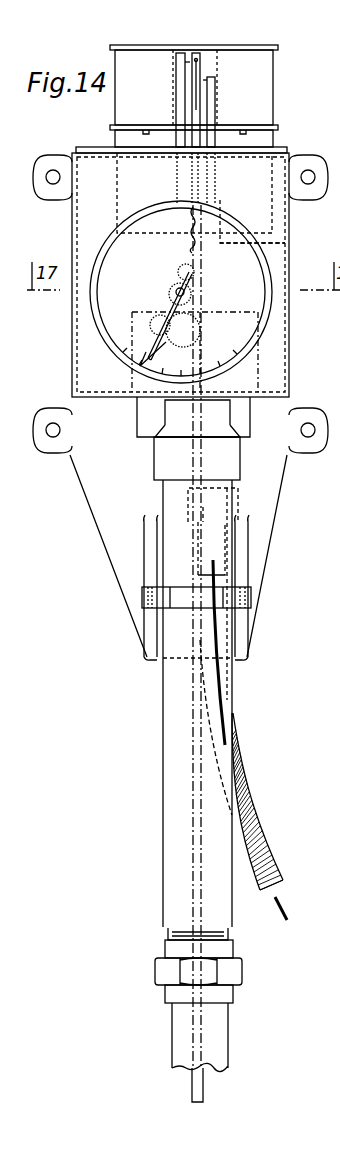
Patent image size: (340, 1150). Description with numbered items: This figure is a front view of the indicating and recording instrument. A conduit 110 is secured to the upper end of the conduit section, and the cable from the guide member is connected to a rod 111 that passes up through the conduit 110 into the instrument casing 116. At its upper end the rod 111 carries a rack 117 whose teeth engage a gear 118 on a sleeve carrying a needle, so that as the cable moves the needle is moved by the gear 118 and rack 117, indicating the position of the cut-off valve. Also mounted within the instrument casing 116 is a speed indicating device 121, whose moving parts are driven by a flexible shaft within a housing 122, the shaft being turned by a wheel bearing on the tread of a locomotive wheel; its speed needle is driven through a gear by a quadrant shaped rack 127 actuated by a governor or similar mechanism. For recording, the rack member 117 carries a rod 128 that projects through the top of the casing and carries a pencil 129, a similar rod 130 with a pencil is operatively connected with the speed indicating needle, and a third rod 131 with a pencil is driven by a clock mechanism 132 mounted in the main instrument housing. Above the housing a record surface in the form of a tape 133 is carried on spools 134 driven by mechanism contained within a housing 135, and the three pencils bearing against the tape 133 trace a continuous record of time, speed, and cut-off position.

The conduit 110 is at (168, 843).
The rod 111 is at (192, 1078).
The instrument casing 116 is at (288, 335).
The rack 117 is at (195, 258).
The gear 118 is at (170, 283).
The speed indicating device 121 is at (257, 371).
The housing 122 is at (232, 770).
The quadrant shaped rack 127 is at (165, 348).
The rod 128 is at (196, 110).
The pencil 129 is at (198, 58).
The rod 130 is at (176, 90).
The third rod 131 is at (210, 113).
The clock mechanism 132 is at (277, 265).
The tape 133 is at (273, 77).
The spools 134 is at (272, 47).
The housing 135 is at (265, 142).